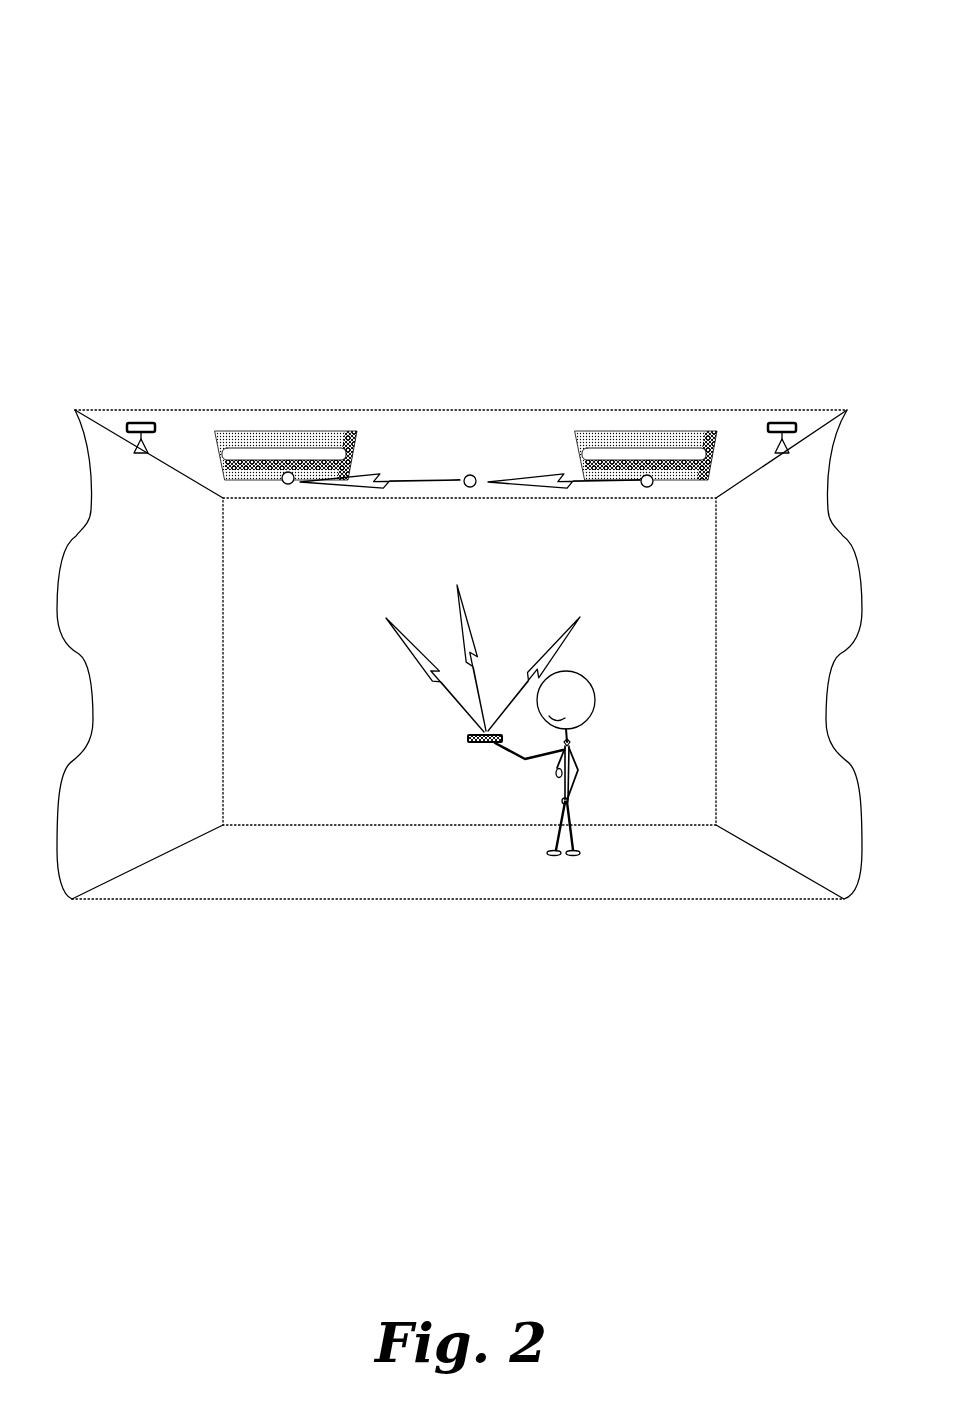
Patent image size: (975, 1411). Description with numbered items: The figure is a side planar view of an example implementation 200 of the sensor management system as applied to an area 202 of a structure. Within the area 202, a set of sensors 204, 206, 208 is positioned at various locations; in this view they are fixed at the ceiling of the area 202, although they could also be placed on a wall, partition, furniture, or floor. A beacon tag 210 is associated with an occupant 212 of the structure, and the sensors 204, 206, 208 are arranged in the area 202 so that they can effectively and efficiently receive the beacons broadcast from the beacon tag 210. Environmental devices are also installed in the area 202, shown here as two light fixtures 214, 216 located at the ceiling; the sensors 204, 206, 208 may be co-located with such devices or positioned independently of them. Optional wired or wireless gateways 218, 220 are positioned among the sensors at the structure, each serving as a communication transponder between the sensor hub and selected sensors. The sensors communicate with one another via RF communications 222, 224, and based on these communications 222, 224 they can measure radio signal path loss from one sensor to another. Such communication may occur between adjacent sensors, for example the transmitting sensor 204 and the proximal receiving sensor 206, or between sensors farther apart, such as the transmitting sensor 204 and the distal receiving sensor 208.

The example implementation 200 is at (120, 62).
The area 202 is at (315, 752).
The sensor 204 is at (284, 474).
The sensor 206 is at (466, 477).
The sensor 208 is at (643, 477).
The beacon tag 210 is at (490, 744).
The occupant 212 is at (578, 767).
The light fixture 214 is at (292, 431).
The light fixture 216 is at (652, 431).
The wired or wireless gateway 218 is at (135, 422).
The wired or wireless gateway 220 is at (795, 422).
The RF communication 222 is at (381, 490).
The RF communication 224 is at (566, 490).